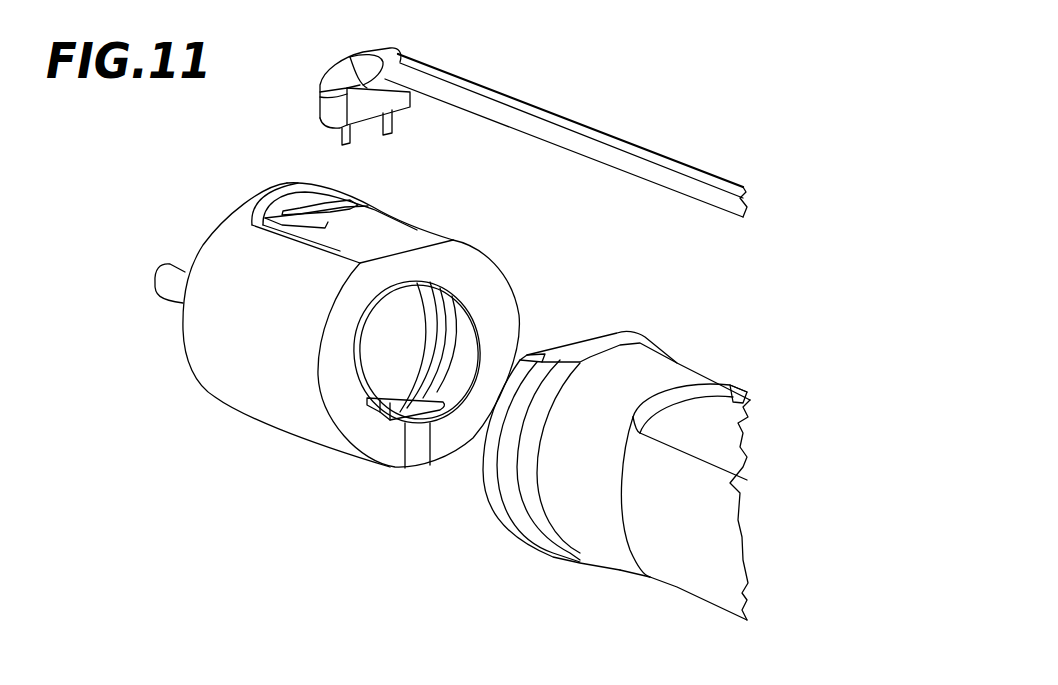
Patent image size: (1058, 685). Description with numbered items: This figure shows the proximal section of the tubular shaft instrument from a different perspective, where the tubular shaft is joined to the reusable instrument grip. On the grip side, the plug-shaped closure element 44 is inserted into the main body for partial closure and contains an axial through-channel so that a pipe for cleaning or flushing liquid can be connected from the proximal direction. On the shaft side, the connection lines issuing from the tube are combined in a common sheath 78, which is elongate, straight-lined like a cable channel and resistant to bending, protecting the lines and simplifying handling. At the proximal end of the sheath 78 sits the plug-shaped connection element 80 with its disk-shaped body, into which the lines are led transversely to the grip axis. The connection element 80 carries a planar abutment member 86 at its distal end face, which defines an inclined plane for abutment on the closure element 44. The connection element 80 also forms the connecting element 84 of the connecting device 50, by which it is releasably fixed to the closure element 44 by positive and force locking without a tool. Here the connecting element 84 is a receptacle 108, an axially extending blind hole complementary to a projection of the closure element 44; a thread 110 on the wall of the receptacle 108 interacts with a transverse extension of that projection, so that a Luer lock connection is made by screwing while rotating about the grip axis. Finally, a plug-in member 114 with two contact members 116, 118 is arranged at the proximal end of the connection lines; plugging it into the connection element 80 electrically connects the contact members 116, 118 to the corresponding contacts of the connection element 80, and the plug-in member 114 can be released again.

The closure element 44 is at (512, 493).
The connecting device 50 is at (453, 338).
The sheath 78 is at (546, 132).
The connection element 80 is at (267, 397).
The connecting element 84 is at (392, 372).
The abutment member 86 is at (437, 270).
The receptacle 108 is at (393, 338).
The thread 110 is at (437, 370).
The plug-in member 114 is at (357, 108).
The contact member 116 is at (392, 124).
The contact member 118 is at (347, 142).